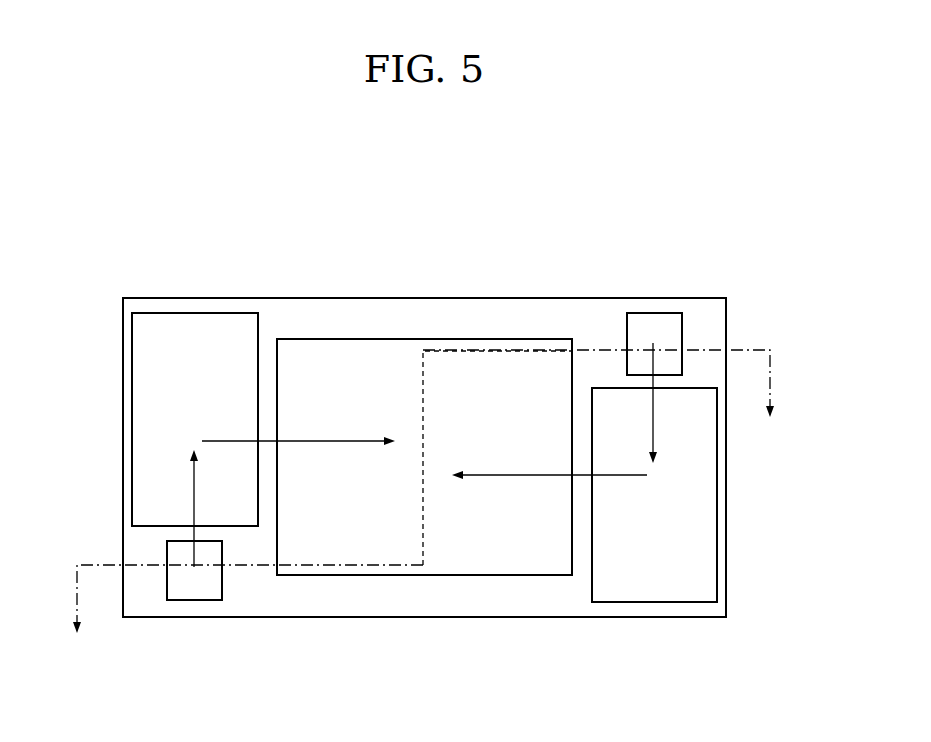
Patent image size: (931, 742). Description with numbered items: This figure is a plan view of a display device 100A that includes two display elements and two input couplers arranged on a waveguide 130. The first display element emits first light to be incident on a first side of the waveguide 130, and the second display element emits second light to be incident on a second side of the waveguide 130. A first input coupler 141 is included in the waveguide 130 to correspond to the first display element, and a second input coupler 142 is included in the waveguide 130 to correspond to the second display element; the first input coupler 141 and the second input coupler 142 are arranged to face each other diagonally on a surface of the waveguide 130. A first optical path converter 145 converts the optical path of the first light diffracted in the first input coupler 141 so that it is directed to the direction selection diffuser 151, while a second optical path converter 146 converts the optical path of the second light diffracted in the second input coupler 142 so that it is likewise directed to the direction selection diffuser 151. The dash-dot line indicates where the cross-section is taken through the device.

The display device 100A is at (737, 245).
The waveguide 130 is at (472, 310).
The first input coupler 141 is at (193, 590).
The second input coupler 142 is at (651, 325).
The first optical path converter 145 is at (150, 410).
The second optical path converter 146 is at (702, 528).
The direction selection diffuser 151 is at (354, 357).